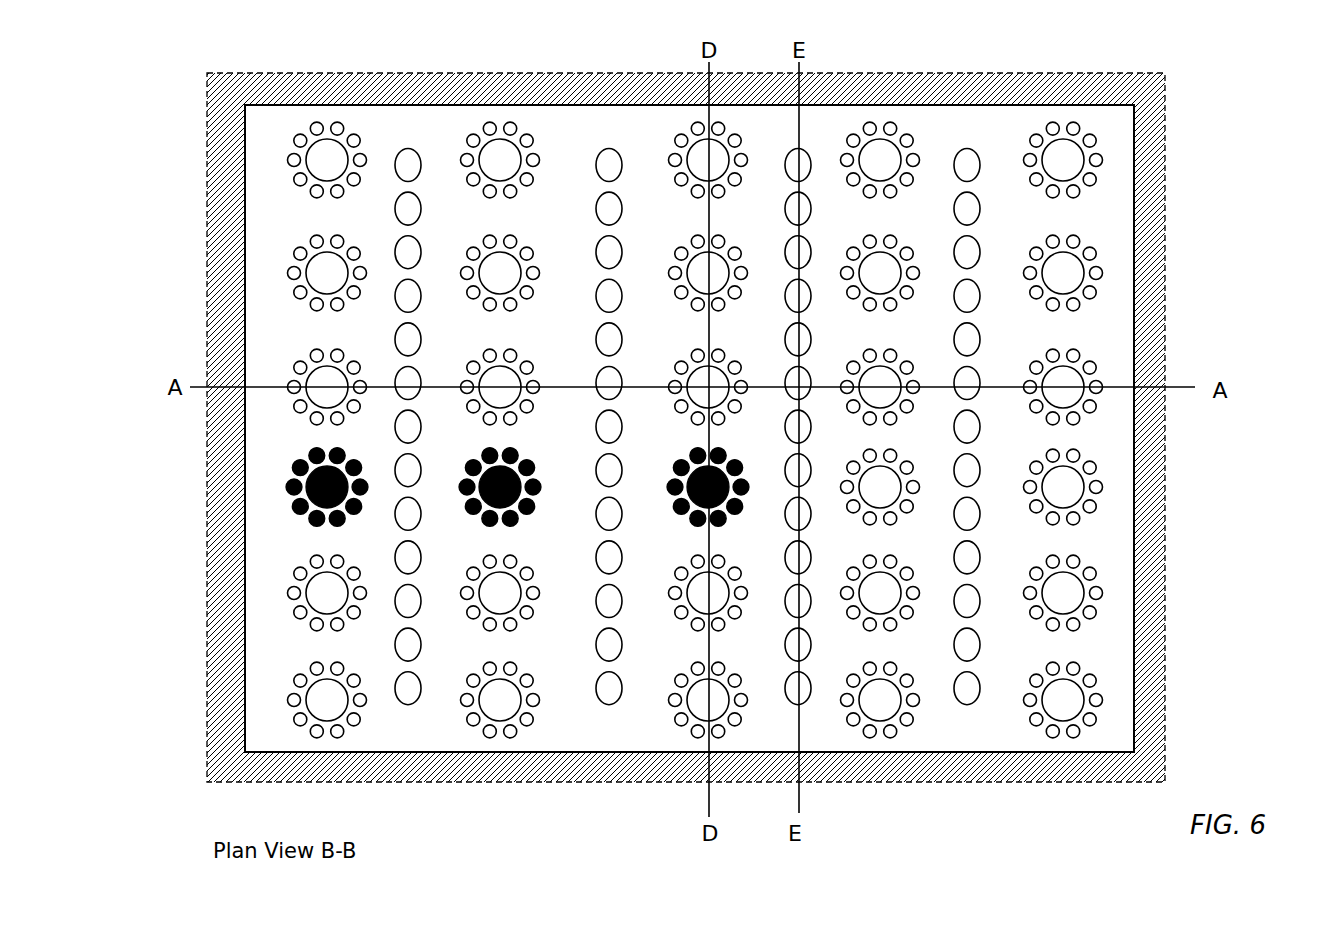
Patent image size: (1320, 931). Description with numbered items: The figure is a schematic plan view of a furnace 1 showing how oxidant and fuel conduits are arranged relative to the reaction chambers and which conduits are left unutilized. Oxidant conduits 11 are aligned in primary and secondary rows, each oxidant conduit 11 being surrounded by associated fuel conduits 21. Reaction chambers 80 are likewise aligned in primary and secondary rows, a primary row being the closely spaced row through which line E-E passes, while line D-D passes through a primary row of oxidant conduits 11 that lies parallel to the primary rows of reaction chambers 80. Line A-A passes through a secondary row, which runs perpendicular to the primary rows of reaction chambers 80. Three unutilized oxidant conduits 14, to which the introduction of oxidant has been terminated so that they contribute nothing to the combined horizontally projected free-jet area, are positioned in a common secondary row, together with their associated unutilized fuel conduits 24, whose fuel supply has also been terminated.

The chip / substrate 1 is at (1189, 107).
The oxidant conduit 11 is at (1075, 272).
The fuel conduit 21 is at (1075, 248).
The unutilized oxidant conduit 14 is at (484, 508).
The unutilized fuel conduit 24 is at (469, 487).
The reaction chamber 80 is at (958, 562).